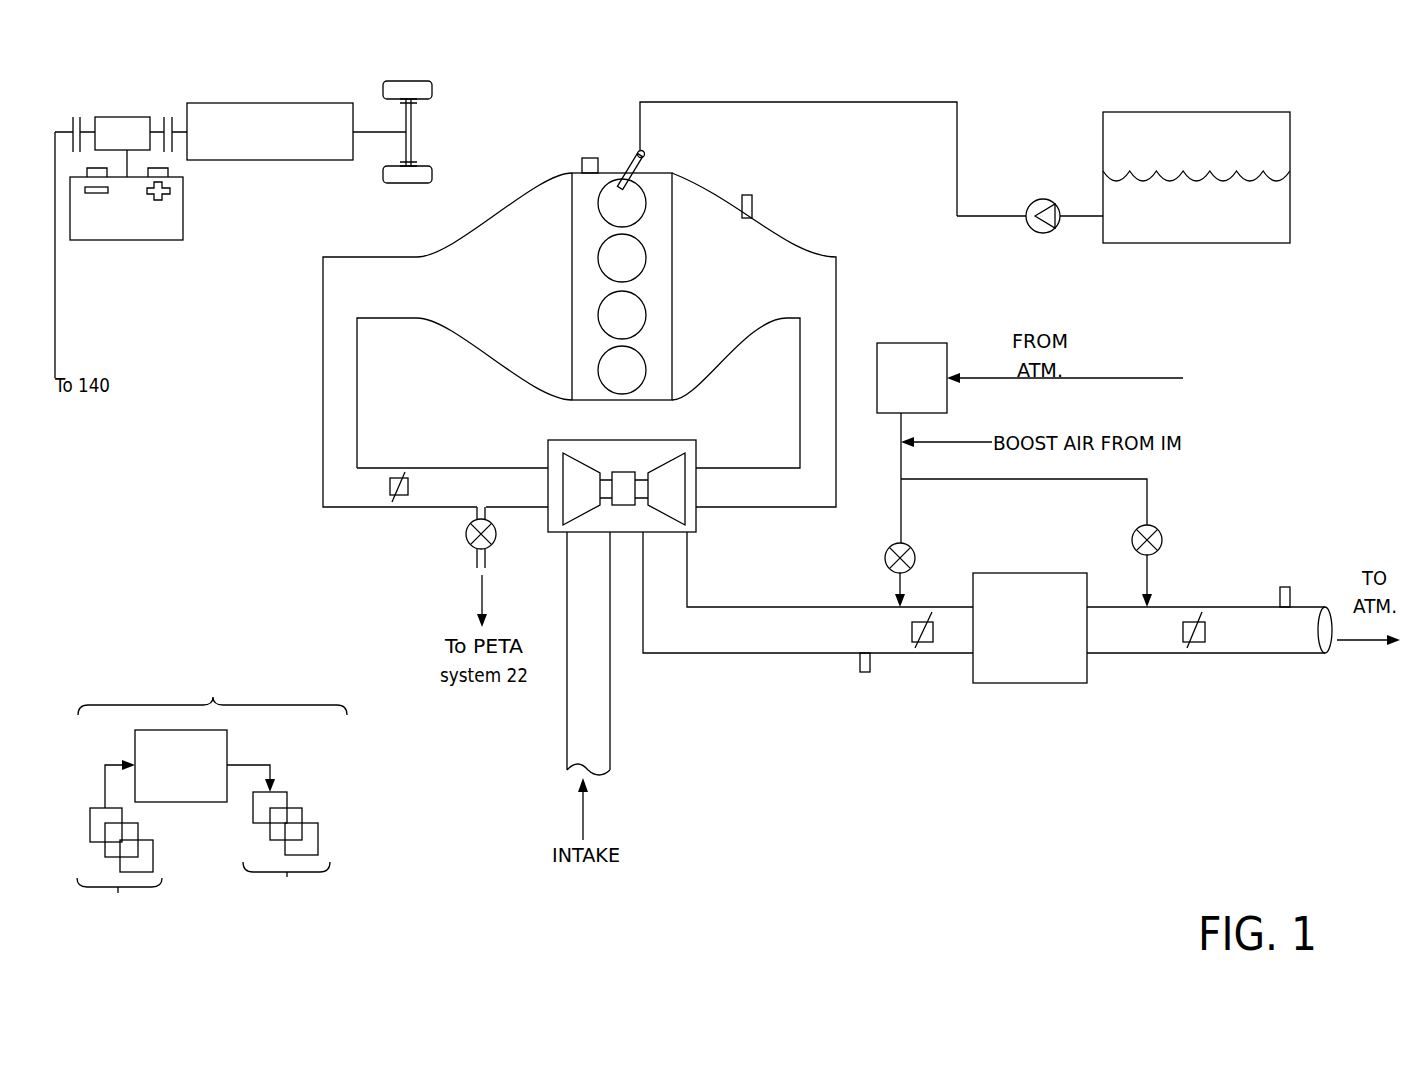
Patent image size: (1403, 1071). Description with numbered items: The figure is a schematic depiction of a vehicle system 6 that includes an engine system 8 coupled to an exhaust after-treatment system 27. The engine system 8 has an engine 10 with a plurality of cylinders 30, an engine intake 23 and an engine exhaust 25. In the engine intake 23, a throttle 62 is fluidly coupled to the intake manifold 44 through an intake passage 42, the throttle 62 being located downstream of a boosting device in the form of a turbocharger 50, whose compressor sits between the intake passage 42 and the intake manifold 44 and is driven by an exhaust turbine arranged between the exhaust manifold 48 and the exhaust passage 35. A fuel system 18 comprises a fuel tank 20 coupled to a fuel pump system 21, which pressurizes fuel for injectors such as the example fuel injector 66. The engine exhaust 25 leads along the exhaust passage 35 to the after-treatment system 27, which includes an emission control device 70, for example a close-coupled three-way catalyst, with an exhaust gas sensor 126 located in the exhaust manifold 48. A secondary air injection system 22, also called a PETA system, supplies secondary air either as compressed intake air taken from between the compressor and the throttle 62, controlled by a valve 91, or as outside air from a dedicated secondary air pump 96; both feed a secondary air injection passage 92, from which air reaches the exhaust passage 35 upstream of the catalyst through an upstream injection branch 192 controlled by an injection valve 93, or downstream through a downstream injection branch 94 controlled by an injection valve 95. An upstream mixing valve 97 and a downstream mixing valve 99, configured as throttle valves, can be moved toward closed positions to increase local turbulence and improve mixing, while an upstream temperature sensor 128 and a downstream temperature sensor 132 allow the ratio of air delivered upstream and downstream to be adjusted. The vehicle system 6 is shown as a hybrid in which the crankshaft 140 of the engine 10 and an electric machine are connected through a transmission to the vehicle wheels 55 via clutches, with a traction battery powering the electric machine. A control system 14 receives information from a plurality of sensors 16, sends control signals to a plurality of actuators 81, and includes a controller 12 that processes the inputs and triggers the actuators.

The vehicle system 6 is at (1357, 121).
The engine system 8 is at (521, 143).
The engine 10 is at (672, 267).
The controller 12 is at (181, 766).
The control system 14 is at (212, 683).
The sensors 16 is at (119, 849).
The fuel system 18 is at (1217, 292).
The fuel tank 20 is at (1290, 222).
The fuel pump system 21 is at (1043, 199).
The secondary air injection system 22 is at (1255, 450).
The engine intake 23 is at (460, 432).
The engine exhaust 25 is at (868, 300).
The exhaust after-treatment system 27 is at (1022, 745).
The cylinders 30 is at (646, 199).
The exhaust passage 35 is at (1302, 607).
The intake passage 42 is at (565, 712).
The intake manifold 44 is at (447, 340).
The exhaust manifold 48 is at (754, 340).
The turbocharger 50 is at (620, 440).
The vehicle wheels 55 is at (410, 183).
The throttle 62 is at (408, 490).
The fuel injector 66 is at (630, 163).
The emission control device 70 is at (1060, 573).
The actuators 81 is at (278, 843).
The valve 91 is at (497, 528).
The secondary air injection passage 92 is at (901, 466).
The injection valve 93 is at (915, 553).
The downstream injection branch 94 is at (1147, 495).
The injection valve 95 is at (1162, 535).
The secondary air pump 96 is at (917, 343).
The upstream mixing valve 97 is at (941, 622).
The downstream mixing valve 99 is at (1211, 622).
The exhaust gas sensor 126 is at (752, 212).
The upstream temperature sensor 128 is at (872, 655).
The downstream temperature sensor 132 is at (1284, 587).
The crankshaft 140 is at (588, 158).
The upstream injection branch 192 is at (901, 515).